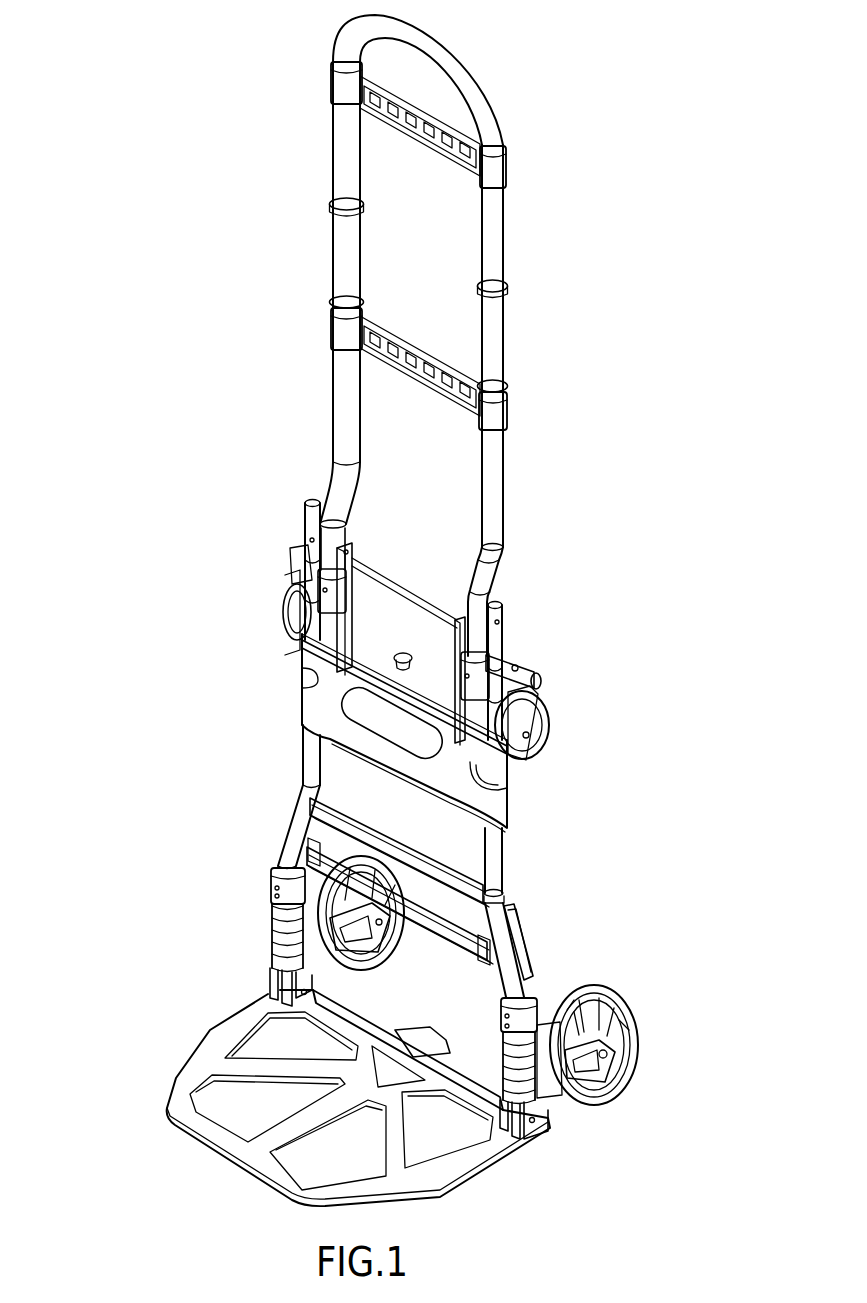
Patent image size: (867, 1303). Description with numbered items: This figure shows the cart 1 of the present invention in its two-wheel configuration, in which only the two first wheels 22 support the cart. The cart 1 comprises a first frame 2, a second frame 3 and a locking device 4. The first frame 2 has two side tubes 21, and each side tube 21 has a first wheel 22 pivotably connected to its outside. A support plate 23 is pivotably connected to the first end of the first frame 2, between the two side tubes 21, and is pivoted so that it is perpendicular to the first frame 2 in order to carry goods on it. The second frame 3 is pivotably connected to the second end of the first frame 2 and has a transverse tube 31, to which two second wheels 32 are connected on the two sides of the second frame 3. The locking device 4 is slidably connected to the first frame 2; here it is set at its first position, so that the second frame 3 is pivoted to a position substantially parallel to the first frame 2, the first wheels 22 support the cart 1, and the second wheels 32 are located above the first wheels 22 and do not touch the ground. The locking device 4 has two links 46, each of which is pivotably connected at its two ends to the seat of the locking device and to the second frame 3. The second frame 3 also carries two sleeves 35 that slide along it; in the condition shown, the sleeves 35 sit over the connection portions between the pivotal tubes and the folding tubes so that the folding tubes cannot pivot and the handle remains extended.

The cart 1 is at (222, 245).
The first frame 2 is at (570, 888).
The side tubes 21 is at (503, 848).
The first wheel 22 is at (622, 992).
The support plate 23 is at (182, 1060).
The second frame 3 is at (530, 447).
The transverse tube 31 is at (520, 660).
The second wheels 32 is at (553, 724).
The sleeves 35 is at (503, 320).
The locking device 4 is at (282, 678).
The links 46 is at (350, 605).